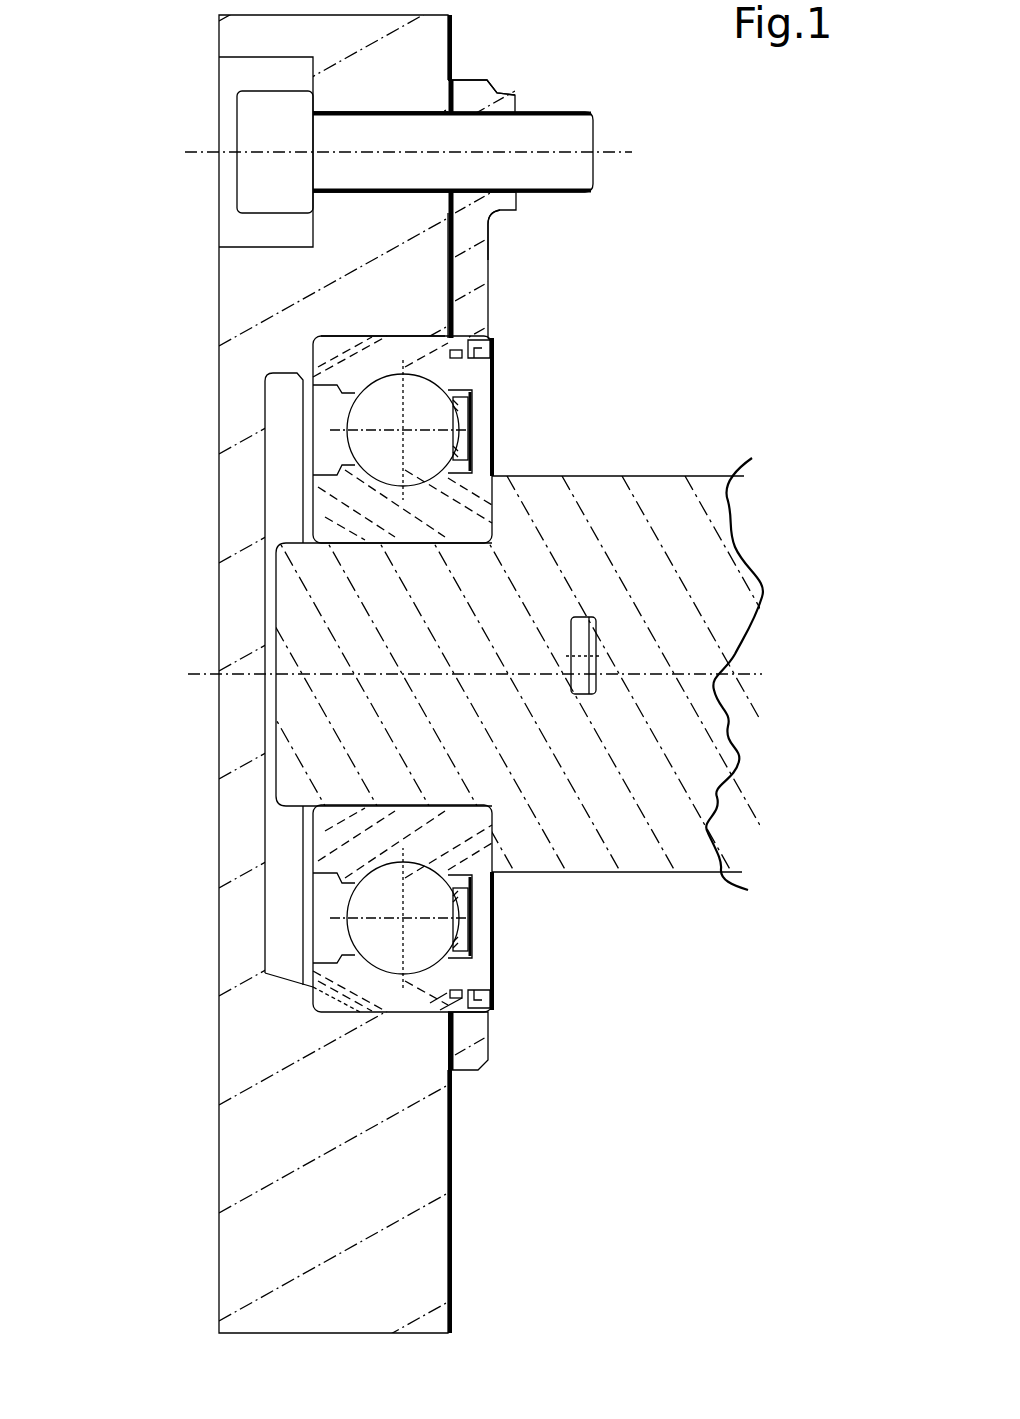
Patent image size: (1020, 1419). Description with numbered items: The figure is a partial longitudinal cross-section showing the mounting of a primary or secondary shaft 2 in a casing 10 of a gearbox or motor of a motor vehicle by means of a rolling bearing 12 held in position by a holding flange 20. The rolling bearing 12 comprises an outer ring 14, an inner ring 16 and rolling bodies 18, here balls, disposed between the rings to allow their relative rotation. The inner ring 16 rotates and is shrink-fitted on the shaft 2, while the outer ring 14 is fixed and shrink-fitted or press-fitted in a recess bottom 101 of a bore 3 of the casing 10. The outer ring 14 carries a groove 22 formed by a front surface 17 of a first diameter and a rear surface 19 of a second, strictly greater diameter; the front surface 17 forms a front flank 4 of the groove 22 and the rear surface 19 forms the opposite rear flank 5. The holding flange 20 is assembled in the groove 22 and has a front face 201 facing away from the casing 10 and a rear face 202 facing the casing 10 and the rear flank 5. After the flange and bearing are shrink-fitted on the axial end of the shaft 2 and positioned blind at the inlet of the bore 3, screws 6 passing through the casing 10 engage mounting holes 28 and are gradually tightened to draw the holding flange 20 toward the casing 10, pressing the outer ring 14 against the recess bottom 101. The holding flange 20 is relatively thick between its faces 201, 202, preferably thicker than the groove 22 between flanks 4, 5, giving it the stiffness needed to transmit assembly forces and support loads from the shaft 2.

The shaft 2 is at (547, 525).
The bore 3 is at (360, 1011).
The front flank 4 is at (462, 998).
The rear flank 5 is at (447, 993).
The screws 6 is at (553, 135).
The casing 10 is at (273, 1233).
The rolling bearing 12 is at (272, 439).
The outer ring 14 is at (335, 355).
The inner ring 16 is at (323, 498).
The front surface 17 is at (478, 347).
The rolling bodies 18 is at (375, 409).
The rear surface 19 is at (430, 337).
The holding flange 20 is at (472, 305).
The groove 22 is at (464, 357).
The mounting holes 28 is at (460, 110).
The recess bottom 101 is at (313, 990).
The front face 201 is at (487, 240).
The rear face 202 is at (448, 247).